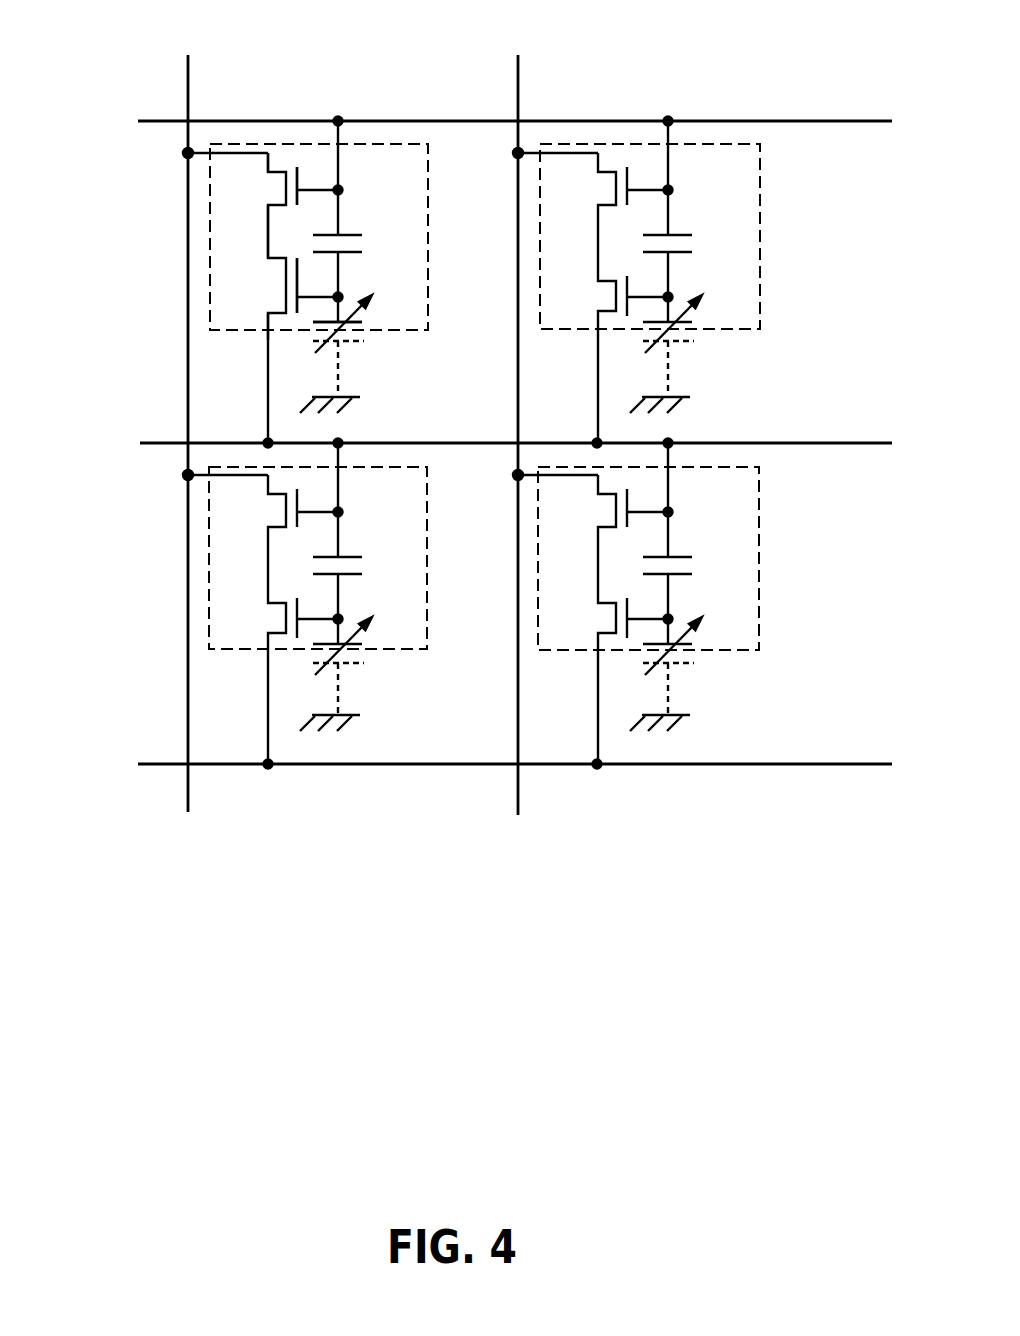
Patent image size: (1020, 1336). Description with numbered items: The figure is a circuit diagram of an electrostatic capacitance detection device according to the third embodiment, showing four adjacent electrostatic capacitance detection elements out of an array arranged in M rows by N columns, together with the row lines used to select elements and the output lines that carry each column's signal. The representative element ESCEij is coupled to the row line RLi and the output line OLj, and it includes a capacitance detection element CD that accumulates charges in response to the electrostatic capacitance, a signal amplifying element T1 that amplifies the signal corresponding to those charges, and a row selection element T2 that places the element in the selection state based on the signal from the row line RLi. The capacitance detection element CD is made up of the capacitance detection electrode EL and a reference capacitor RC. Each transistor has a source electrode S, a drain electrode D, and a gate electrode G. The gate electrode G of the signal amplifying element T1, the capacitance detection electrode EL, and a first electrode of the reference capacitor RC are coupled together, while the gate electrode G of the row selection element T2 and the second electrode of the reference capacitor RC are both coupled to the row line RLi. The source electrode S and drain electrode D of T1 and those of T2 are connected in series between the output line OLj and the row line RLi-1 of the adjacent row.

The signal amplifying element T1 is at (470, 498).
The row selection element T2 is at (428, 350).
The reference capacitor RC is at (516, 382).
The capacitance detection element CD is at (526, 505).
The drain electrode D is at (278, 215).
The gate electrode G is at (315, 238).
The source electrode S is at (277, 274).
The capacitance detection electrode EL is at (331, 312).
The electrostatic capacitance detection element ESCEij is at (402, 651).
The row line RLi is at (470, 428).
The row line RLi-1 is at (470, 749).
The output line OLj is at (197, 406).